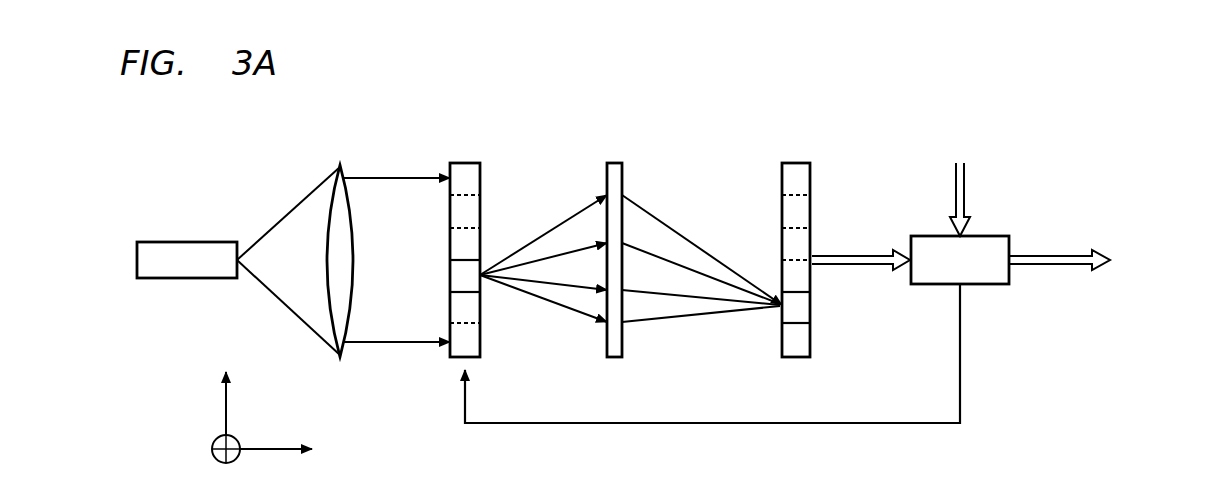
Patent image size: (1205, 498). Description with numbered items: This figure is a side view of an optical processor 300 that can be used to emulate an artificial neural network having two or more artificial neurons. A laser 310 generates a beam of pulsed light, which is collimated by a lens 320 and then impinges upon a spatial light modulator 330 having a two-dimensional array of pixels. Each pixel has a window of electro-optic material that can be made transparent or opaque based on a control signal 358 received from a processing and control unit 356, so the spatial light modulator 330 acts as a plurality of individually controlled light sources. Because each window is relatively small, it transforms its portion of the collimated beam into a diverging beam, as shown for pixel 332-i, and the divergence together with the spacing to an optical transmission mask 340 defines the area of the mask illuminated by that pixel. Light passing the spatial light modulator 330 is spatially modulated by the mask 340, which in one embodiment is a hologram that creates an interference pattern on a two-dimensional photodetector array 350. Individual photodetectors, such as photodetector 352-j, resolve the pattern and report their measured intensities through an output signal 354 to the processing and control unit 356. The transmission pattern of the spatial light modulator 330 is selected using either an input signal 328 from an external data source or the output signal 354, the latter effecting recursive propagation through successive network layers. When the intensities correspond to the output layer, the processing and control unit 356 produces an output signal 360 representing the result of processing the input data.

The optical processor 300 is at (213, 111).
The laser 310 is at (178, 242).
The lens 320 is at (343, 168).
The input signal 328 is at (956, 185).
The spatial light modulator 330 is at (505, 230).
The pixel 332-i is at (475, 281).
The optical transmission mask 340 is at (614, 163).
The photodetector array 350 is at (841, 230).
The photodetector 352-j is at (803, 310).
The output signal 354 is at (855, 255).
The processing and control unit 356 is at (985, 284).
The control signal 358 is at (837, 423).
The output signal 360 is at (1052, 256).